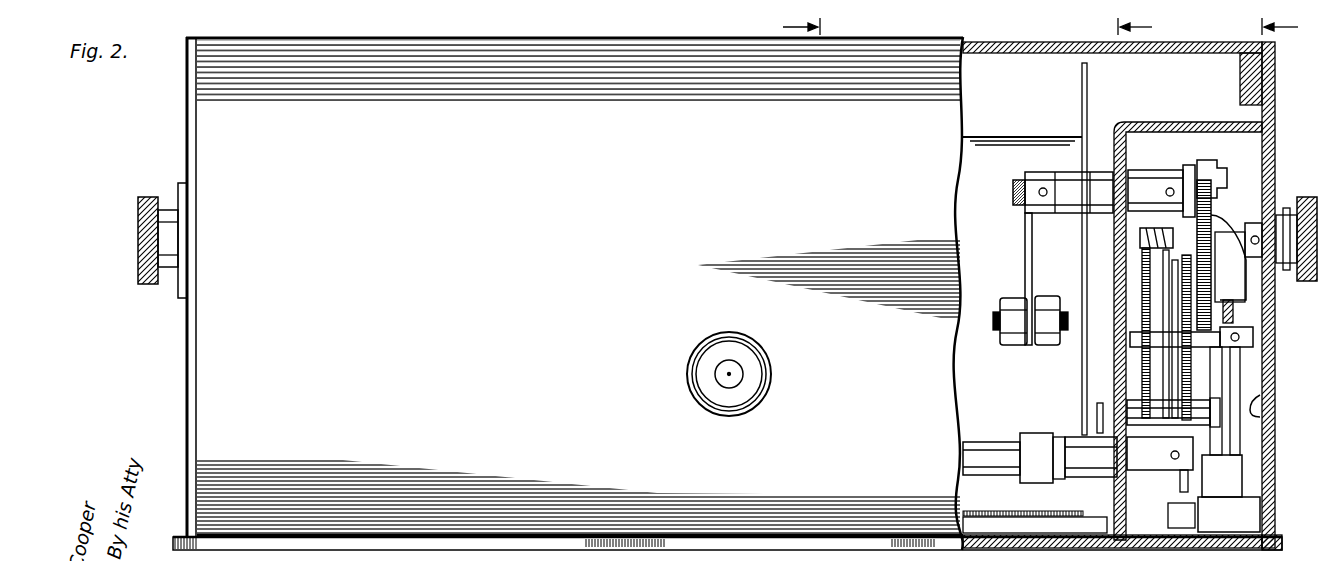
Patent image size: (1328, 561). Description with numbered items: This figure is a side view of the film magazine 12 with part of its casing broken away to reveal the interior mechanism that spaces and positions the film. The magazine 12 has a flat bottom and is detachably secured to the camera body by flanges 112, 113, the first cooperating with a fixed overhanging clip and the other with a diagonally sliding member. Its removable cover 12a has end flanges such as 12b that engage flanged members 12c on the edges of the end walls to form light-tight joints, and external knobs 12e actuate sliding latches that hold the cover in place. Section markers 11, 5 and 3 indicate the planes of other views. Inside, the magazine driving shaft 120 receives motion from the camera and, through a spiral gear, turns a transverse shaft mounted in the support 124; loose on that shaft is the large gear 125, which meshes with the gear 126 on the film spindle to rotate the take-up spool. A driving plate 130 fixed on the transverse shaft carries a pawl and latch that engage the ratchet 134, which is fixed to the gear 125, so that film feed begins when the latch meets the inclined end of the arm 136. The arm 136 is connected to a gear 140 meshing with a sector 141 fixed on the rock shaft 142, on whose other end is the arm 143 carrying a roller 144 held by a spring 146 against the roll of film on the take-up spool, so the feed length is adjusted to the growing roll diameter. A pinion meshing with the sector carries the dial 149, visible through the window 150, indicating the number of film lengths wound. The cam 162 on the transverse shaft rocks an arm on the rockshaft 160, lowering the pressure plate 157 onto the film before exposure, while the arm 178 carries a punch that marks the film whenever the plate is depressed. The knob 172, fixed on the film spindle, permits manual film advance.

The film magazine 12 is at (574, 293).
The magazine cover 12a is at (205, 137).
The end flange 12b is at (1268, 62).
The flanged member 12c is at (1245, 82).
The external knob 12e is at (772, 372).
The flange 112 is at (183, 535).
The flange 113 is at (1284, 536).
The section line 11 is at (815, 27).
The section line 5 is at (1126, 27).
The section line 3 is at (1271, 27).
The magazine driving shaft 120 is at (1228, 440).
The support 124 is at (1220, 380).
The large gear 125 is at (1135, 245).
The gear 126 is at (1140, 218).
The driving plate 130 is at (1135, 278).
The ratchet 134 is at (1135, 262).
The arm 136 is at (1216, 286).
The gear 140 is at (1250, 360).
The sector 141 is at (1216, 268).
The rock shaft 142 is at (1013, 185).
The arm 143 is at (1027, 243).
The roller 144 is at (1015, 346).
The spring 146 is at (1213, 187).
The dial 149 is at (1262, 402).
The window 150 is at (1282, 282).
The pressure plate 157 is at (1005, 512).
The rockshaft 160 is at (1010, 418).
The cam 162 is at (1140, 300).
The knob 172 is at (1306, 197).
The arm 178 is at (1083, 397).